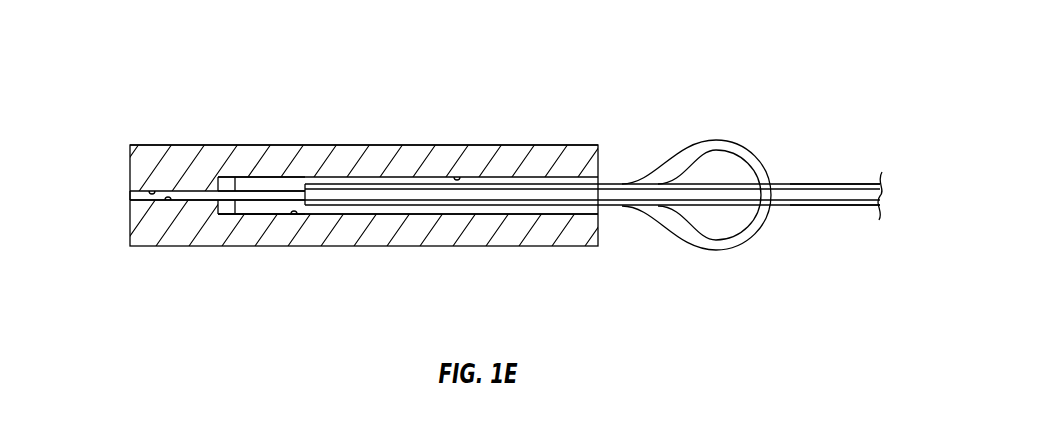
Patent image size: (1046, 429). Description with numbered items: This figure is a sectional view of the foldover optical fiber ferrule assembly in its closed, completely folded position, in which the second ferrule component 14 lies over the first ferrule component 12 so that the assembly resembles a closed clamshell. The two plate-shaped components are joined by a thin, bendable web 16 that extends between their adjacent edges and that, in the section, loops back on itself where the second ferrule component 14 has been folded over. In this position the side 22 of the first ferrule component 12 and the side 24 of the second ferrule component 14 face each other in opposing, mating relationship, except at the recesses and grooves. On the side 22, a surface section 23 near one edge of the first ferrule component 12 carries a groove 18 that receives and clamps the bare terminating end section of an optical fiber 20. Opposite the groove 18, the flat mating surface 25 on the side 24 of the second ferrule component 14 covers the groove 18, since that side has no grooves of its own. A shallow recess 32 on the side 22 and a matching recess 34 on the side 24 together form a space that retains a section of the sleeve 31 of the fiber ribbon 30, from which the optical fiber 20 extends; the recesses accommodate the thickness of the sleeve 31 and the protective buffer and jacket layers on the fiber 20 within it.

The first ferrule component 12 is at (283, 233).
The second ferrule component 14 is at (259, 152).
The web 16 is at (715, 140).
The groove 18 is at (130, 221).
The optical fiber 20 is at (200, 200).
The side of the first ferrule component 22 is at (296, 216).
The surface section 23 is at (168, 200).
The side of the second ferrule component 24 is at (457, 178).
The mating surface 25 is at (152, 191).
The fiber ribbon 30 is at (847, 172).
The sleeve 31 is at (838, 206).
The recess 32 is at (260, 212).
The matching recess 34 is at (295, 183).